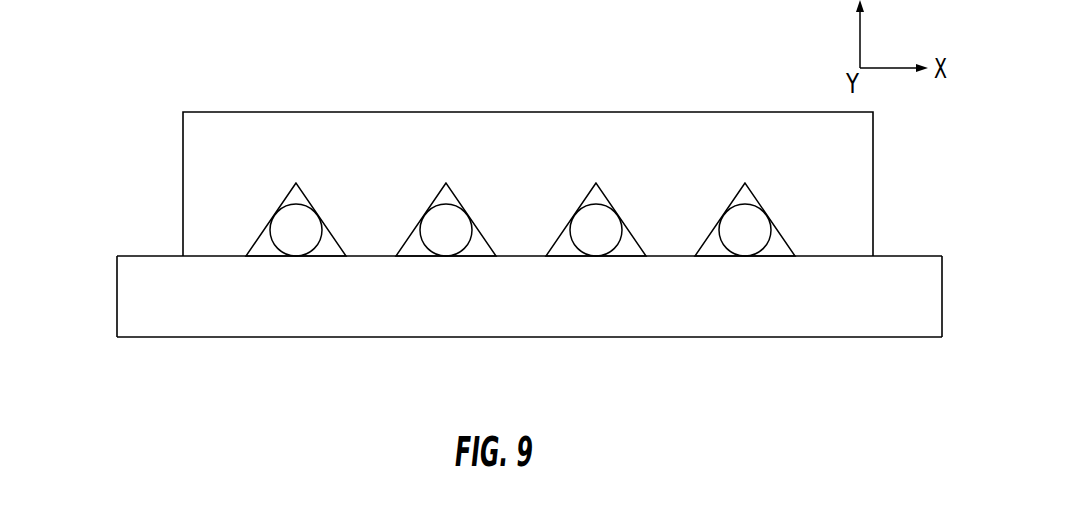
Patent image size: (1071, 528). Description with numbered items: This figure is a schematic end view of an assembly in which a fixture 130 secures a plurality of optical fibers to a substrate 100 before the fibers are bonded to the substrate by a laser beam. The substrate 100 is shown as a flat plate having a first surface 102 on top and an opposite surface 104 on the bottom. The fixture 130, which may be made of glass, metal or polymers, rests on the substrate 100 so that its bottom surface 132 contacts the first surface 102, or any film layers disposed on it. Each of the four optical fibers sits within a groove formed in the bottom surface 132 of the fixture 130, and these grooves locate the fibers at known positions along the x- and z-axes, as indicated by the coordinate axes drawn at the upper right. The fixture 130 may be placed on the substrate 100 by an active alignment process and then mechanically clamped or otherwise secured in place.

The substrate 100 is at (486, 298).
The first surface 102 is at (157, 254).
The substrate bottom surface 104 is at (160, 338).
The fixture 130 is at (173, 113).
The bottom surface 132 is at (218, 257).